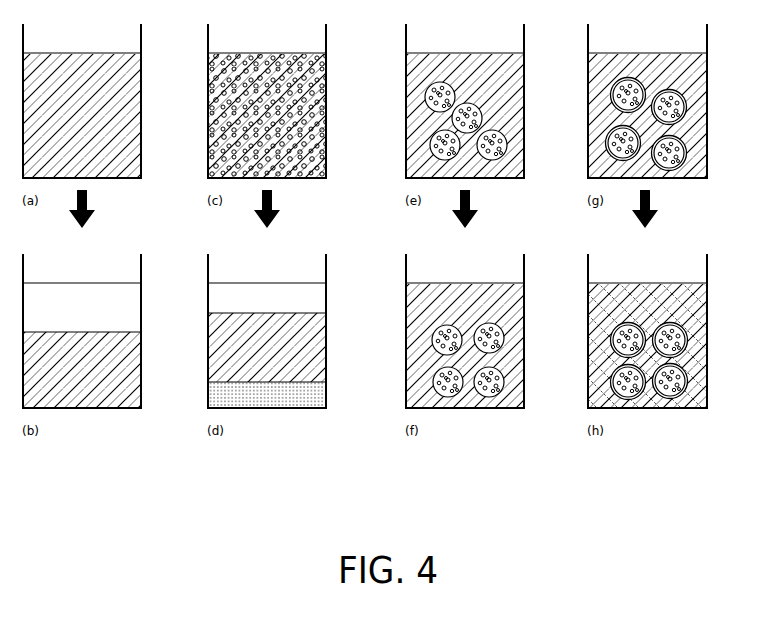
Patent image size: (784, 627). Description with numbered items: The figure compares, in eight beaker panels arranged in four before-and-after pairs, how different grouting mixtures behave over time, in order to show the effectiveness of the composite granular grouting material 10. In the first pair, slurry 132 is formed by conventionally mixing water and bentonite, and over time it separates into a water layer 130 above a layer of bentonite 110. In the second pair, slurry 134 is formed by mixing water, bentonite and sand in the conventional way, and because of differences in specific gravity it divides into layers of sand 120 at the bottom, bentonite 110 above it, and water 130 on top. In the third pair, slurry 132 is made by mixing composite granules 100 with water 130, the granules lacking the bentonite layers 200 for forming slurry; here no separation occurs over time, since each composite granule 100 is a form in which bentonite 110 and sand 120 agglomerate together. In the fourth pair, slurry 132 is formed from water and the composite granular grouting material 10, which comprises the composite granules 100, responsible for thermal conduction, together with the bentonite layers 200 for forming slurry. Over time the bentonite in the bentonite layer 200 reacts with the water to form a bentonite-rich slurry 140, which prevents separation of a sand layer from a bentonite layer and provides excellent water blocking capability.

The composite granular grouting material 10 is at (689, 97).
The composite granules 100 is at (500, 138).
The bentonite 110 is at (133, 376).
The sand 120 is at (320, 394).
The water 130 is at (521, 84).
The slurry 132 is at (138, 90).
The slurry 134 is at (322, 86).
The bentonite-rich slurry 140 is at (690, 300).
The bentonite layer for forming slurry 200 is at (682, 110).